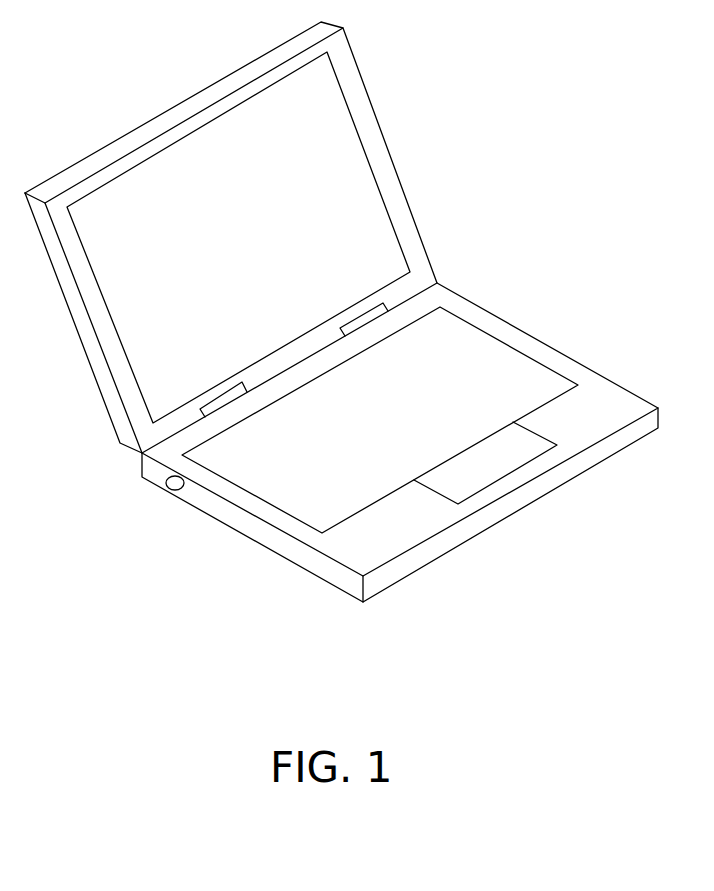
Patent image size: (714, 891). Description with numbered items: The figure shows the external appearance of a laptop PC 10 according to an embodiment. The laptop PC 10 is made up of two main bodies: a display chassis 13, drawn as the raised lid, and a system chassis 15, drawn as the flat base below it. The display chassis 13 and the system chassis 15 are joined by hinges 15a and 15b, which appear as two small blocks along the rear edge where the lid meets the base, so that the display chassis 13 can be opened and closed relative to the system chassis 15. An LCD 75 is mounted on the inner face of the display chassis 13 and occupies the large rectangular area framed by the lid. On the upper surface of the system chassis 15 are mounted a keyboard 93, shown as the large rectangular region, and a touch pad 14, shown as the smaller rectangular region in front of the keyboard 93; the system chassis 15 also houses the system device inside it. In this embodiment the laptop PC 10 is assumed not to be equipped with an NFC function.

The laptop PC 10 is at (492, 159).
The display chassis 13 is at (381, 127).
The LCD 75 is at (250, 207).
The system chassis 15 is at (477, 304).
The hinge 15a is at (218, 394).
The hinge 15b is at (353, 316).
The keyboard 93 is at (398, 430).
The touch pad 14 is at (498, 477).